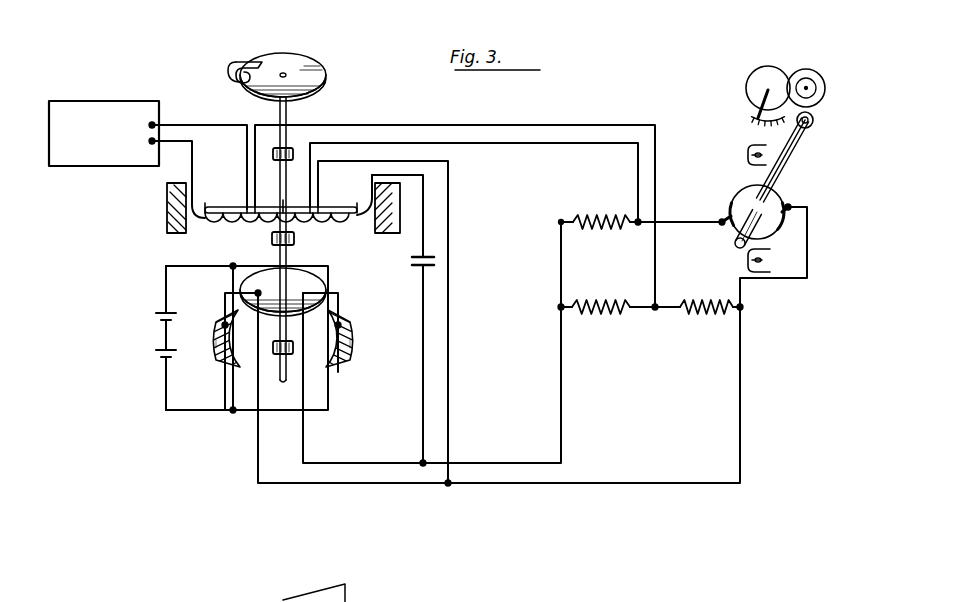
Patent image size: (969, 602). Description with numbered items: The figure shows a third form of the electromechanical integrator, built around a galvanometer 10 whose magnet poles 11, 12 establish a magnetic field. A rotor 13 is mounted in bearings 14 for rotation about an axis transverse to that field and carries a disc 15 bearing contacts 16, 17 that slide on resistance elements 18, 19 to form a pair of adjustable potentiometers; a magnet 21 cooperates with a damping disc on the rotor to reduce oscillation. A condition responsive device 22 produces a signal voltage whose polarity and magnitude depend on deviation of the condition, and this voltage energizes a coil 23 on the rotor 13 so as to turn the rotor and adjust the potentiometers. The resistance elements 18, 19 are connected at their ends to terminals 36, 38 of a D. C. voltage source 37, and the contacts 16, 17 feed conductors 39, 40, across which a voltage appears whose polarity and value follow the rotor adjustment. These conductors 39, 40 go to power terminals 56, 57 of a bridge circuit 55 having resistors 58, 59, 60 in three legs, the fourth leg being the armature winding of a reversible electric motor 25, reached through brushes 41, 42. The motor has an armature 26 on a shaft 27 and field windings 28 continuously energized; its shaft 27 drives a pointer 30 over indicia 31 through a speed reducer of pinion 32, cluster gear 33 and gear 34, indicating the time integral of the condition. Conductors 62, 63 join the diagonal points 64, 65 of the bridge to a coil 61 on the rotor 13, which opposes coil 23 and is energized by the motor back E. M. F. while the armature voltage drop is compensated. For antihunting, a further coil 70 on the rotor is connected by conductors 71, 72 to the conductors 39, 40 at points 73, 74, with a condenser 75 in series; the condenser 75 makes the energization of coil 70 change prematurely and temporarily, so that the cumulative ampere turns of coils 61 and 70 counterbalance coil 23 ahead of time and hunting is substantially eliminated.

The galvanometer 10 is at (150, 233).
The magnet pole 11 is at (171, 236).
The magnet pole 12 is at (387, 237).
The rotor 13 is at (288, 258).
The bearings 14 is at (295, 152).
The disc 15 is at (301, 287).
The contact 16 is at (225, 324).
The contact 17 is at (341, 325).
The resistance element 18 is at (237, 358).
The resistance element 19 is at (356, 352).
The magnet 21 is at (248, 62).
The condition responsive device 22 is at (89, 110).
The coil 23 is at (222, 206).
The reversible electric motor 25 is at (726, 180).
The armature 26 is at (775, 203).
The shaft 27 is at (790, 166).
The field windings 28 is at (748, 153).
The pointer 30 is at (306, 56).
The indicia 31 is at (754, 118).
The pinion 32 is at (806, 130).
The cluster gear 33 is at (805, 66).
The gear 34 is at (747, 84).
The terminal 36 is at (159, 312).
The D. C. voltage source 37 is at (162, 327).
The terminal 38 is at (161, 366).
The conductor 39 is at (334, 485).
The conductor 40 is at (344, 462).
The brush 41 is at (778, 232).
The brush 42 is at (735, 206).
The bridge circuit 55 is at (553, 220).
The power terminal 56 is at (743, 307).
The power terminal 57 is at (560, 308).
The resistor 58 is at (705, 318).
The resistor 59 is at (598, 318).
The resistor 60 is at (599, 231).
The coil 61 is at (297, 207).
The conductor 62 is at (498, 125).
The conductor 63 is at (489, 146).
The diagonal point 64 is at (655, 318).
The diagonal point 65 is at (637, 232).
The coil 70 is at (338, 206).
The conductor 71 is at (450, 305).
The conductor 72 is at (422, 333).
The connection point 73 is at (447, 487).
The connection point 74 is at (421, 462).
The condenser 75 is at (418, 270).